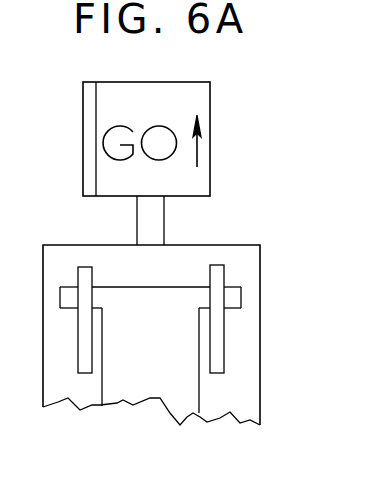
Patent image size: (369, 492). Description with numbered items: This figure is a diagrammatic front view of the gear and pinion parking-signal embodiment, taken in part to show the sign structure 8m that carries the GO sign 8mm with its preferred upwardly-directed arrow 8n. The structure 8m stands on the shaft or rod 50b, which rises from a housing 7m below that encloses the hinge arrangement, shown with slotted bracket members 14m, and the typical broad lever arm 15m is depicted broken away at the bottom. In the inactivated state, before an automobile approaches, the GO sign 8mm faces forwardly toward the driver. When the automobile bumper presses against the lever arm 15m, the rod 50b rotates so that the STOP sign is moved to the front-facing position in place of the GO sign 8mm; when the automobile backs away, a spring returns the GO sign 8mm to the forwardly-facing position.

The structure 8m is at (83, 135).
The GO sign 8mm is at (170, 102).
The direction arrow 8n is at (202, 152).
The shaft 50b is at (142, 219).
The base housing 7m is at (241, 253).
The slotted bracket 14m is at (218, 350).
The lever arm 15m is at (138, 377).